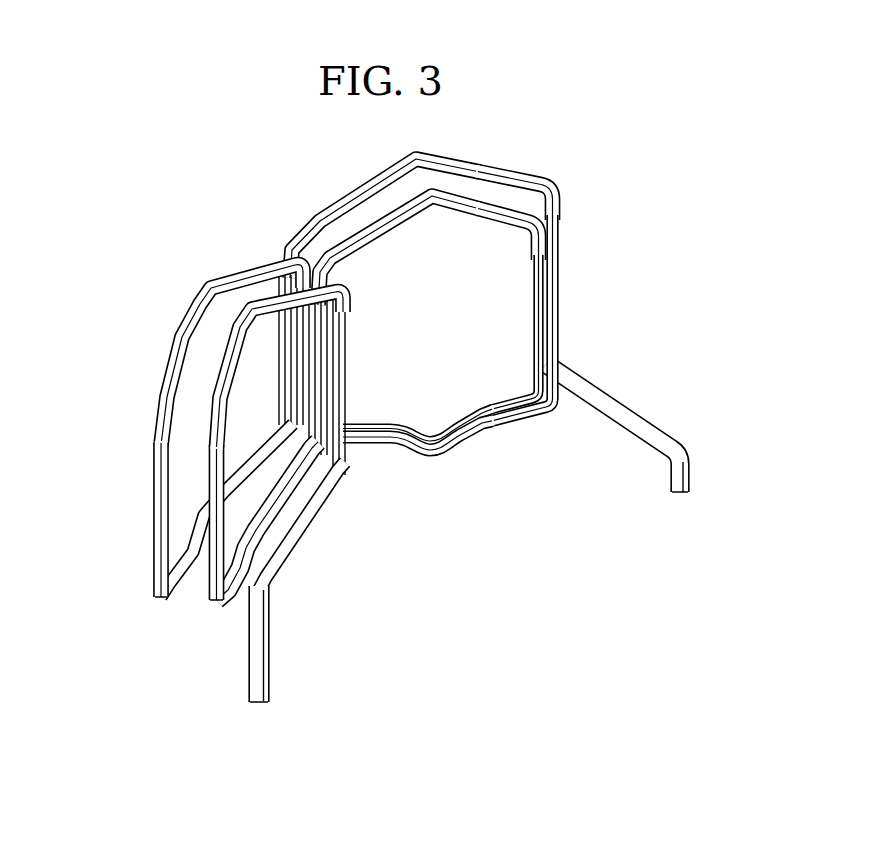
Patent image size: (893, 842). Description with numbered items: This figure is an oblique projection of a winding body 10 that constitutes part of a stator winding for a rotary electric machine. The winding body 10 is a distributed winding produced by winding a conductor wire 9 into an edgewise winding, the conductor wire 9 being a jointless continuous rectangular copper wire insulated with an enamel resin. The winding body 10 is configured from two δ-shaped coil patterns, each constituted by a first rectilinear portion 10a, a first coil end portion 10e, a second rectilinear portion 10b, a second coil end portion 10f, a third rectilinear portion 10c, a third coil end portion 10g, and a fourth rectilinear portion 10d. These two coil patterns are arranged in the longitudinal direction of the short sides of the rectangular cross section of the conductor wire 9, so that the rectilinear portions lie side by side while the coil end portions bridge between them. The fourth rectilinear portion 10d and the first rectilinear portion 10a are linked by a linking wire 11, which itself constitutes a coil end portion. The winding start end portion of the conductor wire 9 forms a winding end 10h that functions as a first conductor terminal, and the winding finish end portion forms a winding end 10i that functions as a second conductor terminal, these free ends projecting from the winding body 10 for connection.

The winding body 10 is at (181, 157).
The conductor wire 9 is at (620, 388).
The first rectilinear portion 10a is at (340, 382).
The second rectilinear portion 10b is at (213, 463).
The third rectilinear portion 10c is at (317, 387).
The fourth rectilinear portion 10d is at (543, 289).
The first coil end portion 10e is at (193, 335).
The second coil end portion 10f is at (247, 470).
The third coil end portion 10g is at (353, 203).
The winding end 10h is at (270, 638).
The winding end 10i is at (673, 477).
The linking wire 11 is at (477, 435).